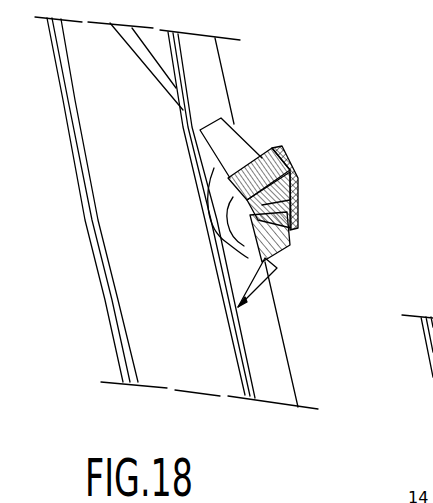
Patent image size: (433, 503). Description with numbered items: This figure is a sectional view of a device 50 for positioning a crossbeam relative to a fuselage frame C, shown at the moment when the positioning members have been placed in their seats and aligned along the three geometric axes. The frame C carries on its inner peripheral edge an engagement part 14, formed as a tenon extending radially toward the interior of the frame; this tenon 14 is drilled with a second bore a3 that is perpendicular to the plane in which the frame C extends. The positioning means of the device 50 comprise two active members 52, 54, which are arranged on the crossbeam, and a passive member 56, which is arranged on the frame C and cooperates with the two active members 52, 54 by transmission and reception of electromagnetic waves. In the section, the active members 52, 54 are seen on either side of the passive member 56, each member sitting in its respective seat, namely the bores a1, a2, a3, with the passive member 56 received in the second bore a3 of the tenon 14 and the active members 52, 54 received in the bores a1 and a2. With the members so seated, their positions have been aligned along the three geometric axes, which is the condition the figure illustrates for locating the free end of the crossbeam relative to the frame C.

The engagement part 14 is at (248, 156).
The device 50 is at (324, 200).
The active member 52 is at (302, 186).
The active member 54 is at (282, 268).
The passive member 56 is at (303, 199).
The bore a1 is at (292, 170).
The bore a2 is at (267, 155).
The second bore a3 is at (290, 228).
The fuselage frame C is at (268, 362).